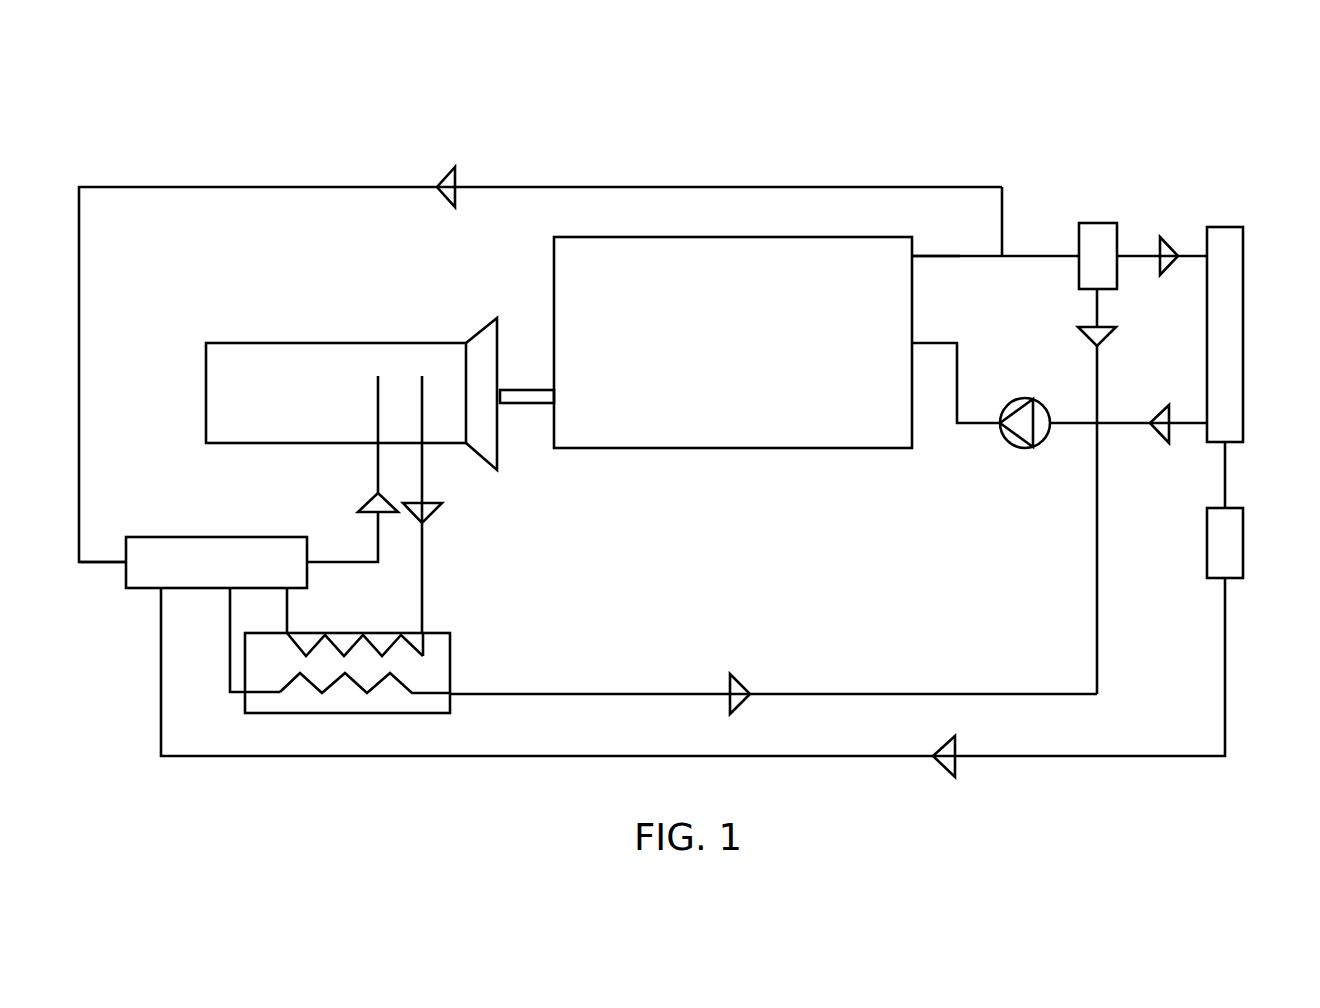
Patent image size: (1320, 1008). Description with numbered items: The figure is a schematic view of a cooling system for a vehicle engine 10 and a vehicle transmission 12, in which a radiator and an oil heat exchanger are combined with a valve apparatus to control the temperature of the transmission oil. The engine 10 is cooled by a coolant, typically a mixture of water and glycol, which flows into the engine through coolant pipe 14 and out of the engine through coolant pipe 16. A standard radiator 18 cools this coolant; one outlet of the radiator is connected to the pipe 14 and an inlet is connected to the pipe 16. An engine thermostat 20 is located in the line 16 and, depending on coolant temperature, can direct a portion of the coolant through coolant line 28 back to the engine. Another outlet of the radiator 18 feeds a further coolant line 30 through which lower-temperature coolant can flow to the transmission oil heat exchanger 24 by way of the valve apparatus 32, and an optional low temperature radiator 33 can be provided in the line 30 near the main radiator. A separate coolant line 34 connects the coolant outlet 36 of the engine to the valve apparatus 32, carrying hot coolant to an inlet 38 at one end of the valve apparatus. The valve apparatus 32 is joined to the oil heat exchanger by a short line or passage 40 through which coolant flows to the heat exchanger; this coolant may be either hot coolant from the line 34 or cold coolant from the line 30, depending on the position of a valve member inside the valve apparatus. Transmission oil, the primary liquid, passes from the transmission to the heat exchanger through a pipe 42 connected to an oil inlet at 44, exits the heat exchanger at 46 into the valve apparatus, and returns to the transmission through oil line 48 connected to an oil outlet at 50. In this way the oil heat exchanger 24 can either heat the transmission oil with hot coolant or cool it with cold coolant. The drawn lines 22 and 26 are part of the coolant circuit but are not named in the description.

The vehicle engine 10 is at (701, 364).
The vehicle transmission 12 is at (328, 410).
The coolant pipe 14 is at (957, 372).
The coolant pipe 16 is at (1040, 255).
The radiator 18 is at (1225, 287).
The engine thermostat 20 is at (1093, 238).
The bypass line 22 is at (1095, 545).
The transmission oil heat exchanger 24 is at (450, 672).
The heat exchanger outlet line 26 is at (747, 683).
The coolant line 28 is at (1103, 335).
The coolant line 30 is at (1227, 682).
The valve apparatus 32 is at (237, 579).
The low temperature radiator 33 is at (1228, 538).
The coolant line 34 is at (267, 187).
The coolant outlet 36 is at (912, 260).
The inlet 38 is at (125, 565).
The short line or passage 40 is at (230, 642).
The oil line or pipe 42 is at (425, 559).
The oil inlet 44 is at (423, 633).
The oil exit 46 is at (287, 590).
The oil line 48 is at (378, 456).
The oil outlet 50 is at (309, 562).